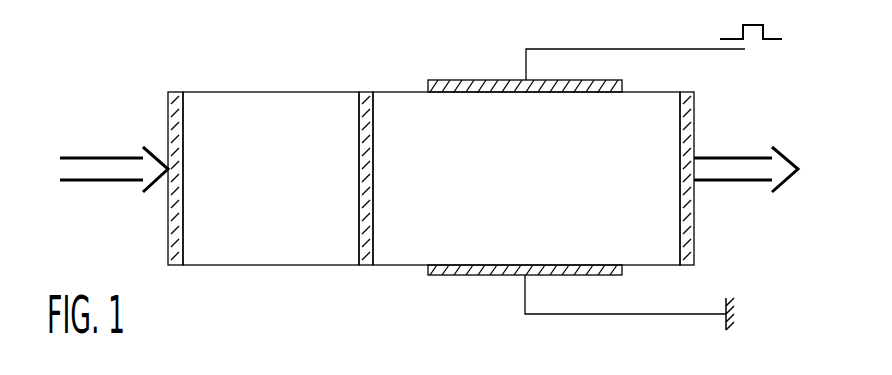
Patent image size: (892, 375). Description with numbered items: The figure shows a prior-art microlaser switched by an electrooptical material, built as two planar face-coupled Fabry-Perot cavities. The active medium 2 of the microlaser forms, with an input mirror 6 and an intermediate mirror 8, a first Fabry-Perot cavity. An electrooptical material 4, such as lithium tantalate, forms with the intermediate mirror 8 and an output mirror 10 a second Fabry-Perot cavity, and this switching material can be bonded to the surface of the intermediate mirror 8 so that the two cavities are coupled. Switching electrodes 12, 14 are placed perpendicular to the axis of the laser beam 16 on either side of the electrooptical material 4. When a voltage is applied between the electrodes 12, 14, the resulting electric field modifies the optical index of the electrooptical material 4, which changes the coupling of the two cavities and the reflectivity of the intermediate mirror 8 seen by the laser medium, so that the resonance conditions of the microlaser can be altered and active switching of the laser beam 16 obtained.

The active medium 2 is at (237, 255).
The electrooptical material 4 is at (390, 103).
The input mirror 6 is at (168, 224).
The intermediate mirror 8 is at (358, 250).
The output mirror 10 is at (685, 224).
The switching electrode 12 is at (444, 270).
The switching electrode 14 is at (462, 88).
The laser beam 16 is at (733, 163).